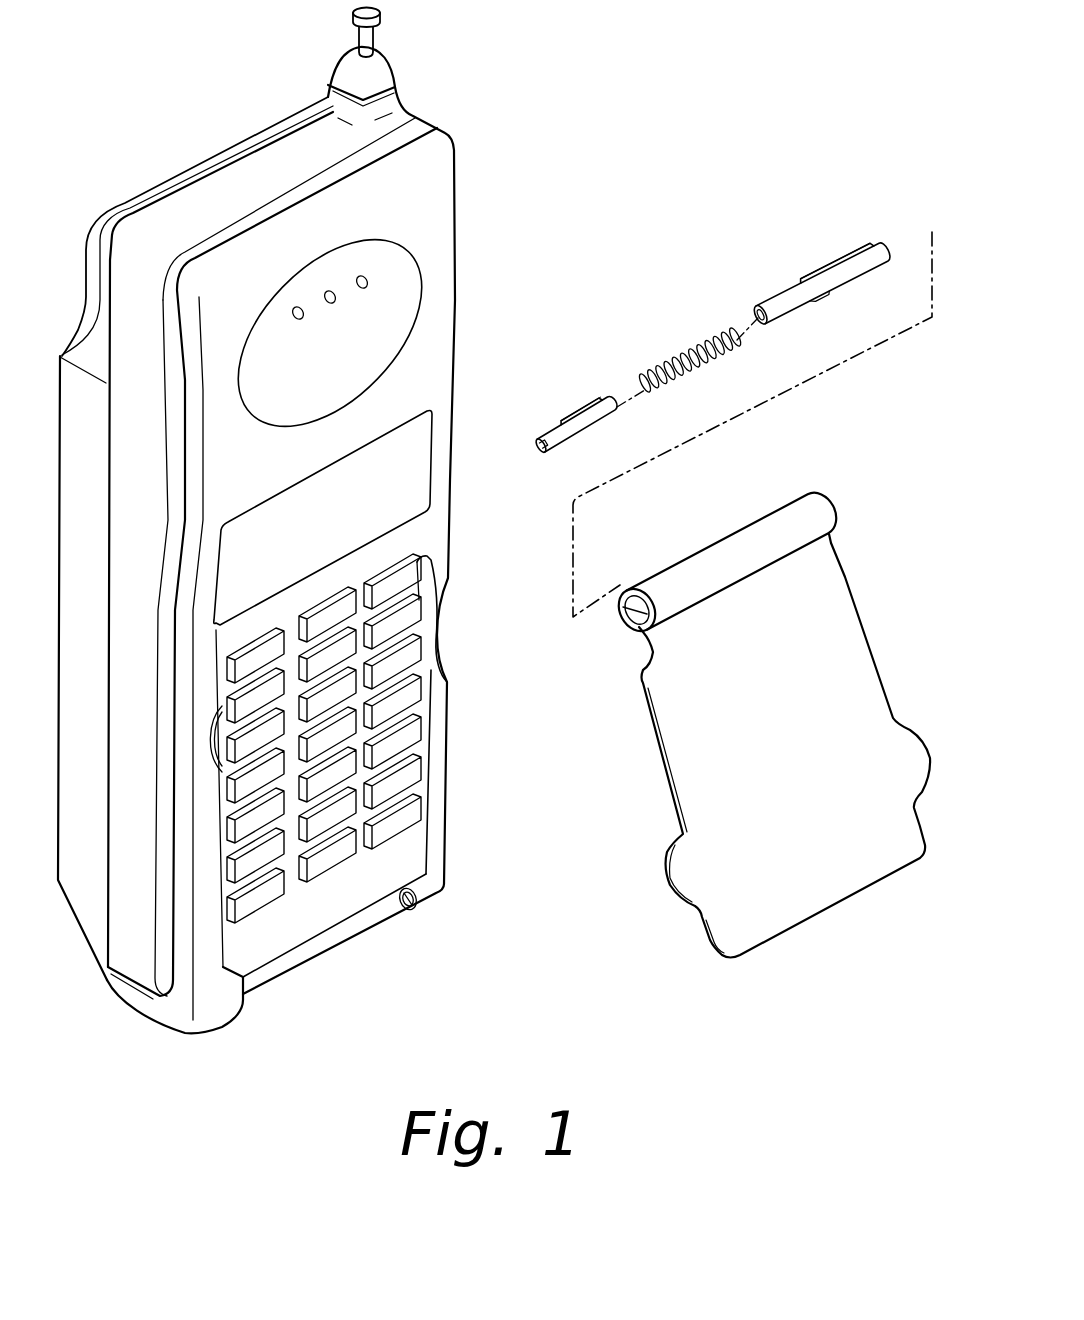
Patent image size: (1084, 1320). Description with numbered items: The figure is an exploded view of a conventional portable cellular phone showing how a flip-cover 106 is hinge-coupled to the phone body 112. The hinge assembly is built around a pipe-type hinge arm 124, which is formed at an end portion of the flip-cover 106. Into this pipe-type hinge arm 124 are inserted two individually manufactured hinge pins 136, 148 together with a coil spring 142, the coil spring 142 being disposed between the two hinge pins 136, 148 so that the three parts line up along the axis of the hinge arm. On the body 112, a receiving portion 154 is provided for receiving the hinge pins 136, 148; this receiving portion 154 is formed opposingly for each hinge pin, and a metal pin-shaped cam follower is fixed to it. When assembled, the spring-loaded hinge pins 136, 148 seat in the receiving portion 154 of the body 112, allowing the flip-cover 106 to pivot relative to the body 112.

The body 112 is at (474, 345).
The receiving portion 154 is at (407, 910).
The hinge pin 136 is at (585, 398).
The coil spring 142 is at (690, 347).
The hinge pin 148 is at (845, 260).
The pipe-type hinge arm 124 is at (735, 557).
The flip-cover 106 is at (816, 888).